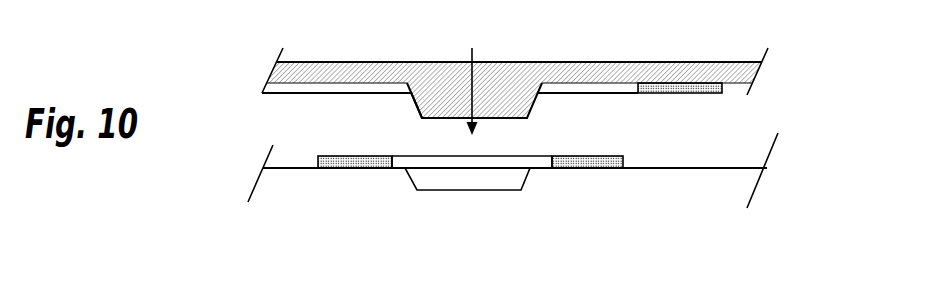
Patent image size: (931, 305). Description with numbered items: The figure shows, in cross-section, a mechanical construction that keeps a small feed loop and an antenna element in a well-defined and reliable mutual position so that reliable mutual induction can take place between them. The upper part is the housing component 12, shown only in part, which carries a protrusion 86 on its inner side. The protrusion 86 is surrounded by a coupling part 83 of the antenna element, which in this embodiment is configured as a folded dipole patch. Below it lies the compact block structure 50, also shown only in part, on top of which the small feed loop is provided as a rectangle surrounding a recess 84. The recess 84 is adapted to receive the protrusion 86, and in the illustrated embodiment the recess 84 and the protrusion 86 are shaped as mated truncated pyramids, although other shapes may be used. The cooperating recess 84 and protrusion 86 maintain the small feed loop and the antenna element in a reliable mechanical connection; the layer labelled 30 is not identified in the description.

The housing component 12 is at (375, 68).
The protrusion 86 is at (413, 111).
The coupling part 83 is at (653, 93).
The compact block structure 50 is at (415, 245).
The adhesive layer 30 is at (375, 168).
The recess 84 is at (493, 180).